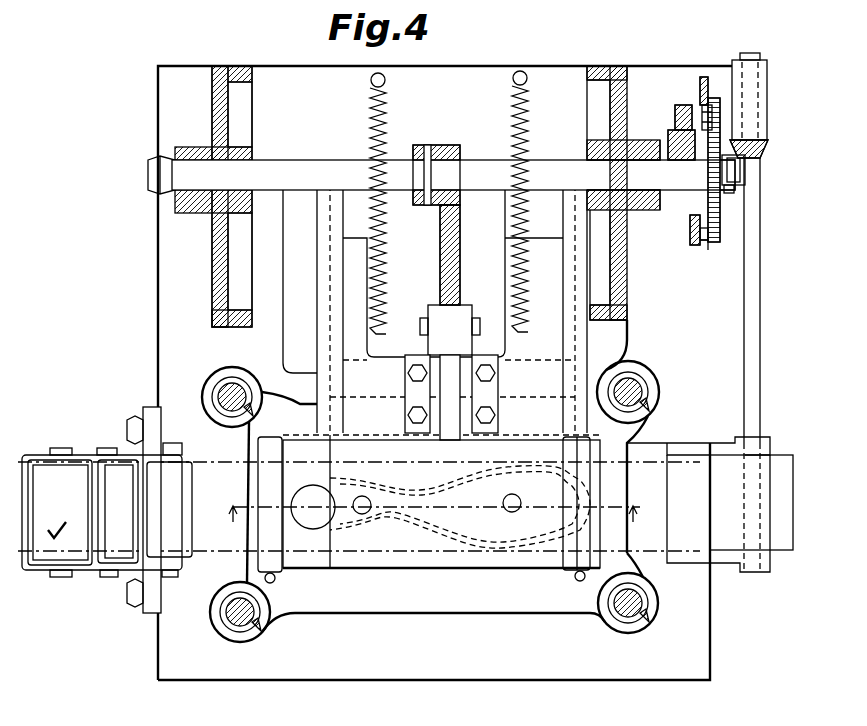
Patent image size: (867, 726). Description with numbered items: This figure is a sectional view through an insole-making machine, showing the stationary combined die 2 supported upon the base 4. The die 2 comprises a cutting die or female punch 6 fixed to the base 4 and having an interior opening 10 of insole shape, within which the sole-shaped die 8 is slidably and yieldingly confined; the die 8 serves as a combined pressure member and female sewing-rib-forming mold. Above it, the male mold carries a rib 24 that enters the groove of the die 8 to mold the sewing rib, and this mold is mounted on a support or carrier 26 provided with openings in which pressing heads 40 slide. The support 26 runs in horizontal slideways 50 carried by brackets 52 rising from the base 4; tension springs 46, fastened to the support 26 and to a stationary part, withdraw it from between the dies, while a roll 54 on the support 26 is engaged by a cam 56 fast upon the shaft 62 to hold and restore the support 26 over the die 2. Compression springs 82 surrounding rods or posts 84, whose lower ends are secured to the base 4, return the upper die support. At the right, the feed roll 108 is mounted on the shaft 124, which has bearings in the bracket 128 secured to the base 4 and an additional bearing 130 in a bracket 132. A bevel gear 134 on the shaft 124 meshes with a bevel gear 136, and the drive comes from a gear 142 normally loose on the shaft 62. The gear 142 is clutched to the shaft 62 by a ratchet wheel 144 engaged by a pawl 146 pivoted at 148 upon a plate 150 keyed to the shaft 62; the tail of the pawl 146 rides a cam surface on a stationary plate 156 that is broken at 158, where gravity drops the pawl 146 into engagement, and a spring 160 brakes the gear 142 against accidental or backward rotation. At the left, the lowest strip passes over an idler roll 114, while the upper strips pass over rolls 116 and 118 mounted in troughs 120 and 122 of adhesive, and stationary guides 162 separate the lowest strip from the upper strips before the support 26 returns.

The stationary combined die 2 is at (236, 440).
The base 4 is at (418, 620).
The cutting die or female punch 6 is at (233, 507).
The die 8 is at (296, 520).
The interior opening 10 is at (310, 511).
The rib 24 is at (467, 538).
The support or carrier 26 is at (410, 562).
The pressing heads 40 is at (368, 509).
The tension springs 46 is at (512, 118).
The horizontal slideways 50 is at (318, 340).
The brackets 52 is at (285, 336).
The roll 54 is at (447, 311).
The cam 56 is at (445, 268).
The shaft 62 is at (483, 157).
The compression springs 82 is at (227, 386).
The rods or posts 84 is at (235, 400).
The feed roll 108 is at (745, 518).
The idler roll 114 is at (167, 543).
The roll 116 is at (40, 470).
The roll 118 is at (107, 467).
The trough 120 is at (50, 567).
The trough 122 is at (113, 567).
The shaft 124 is at (745, 322).
The bracket 128 is at (708, 436).
The bearing 130 is at (760, 62).
The bracket 132 is at (733, 60).
The bevel gear 134 is at (755, 152).
The bevel gear 136 is at (745, 187).
The gear 142 is at (703, 171).
The ratchet wheel 144 is at (698, 145).
The pawl 146 is at (700, 248).
The pivot 148 is at (700, 236).
The plate 150 is at (690, 222).
The stationary plate 156 is at (702, 80).
The broken-away portion 158 is at (702, 107).
The spring 160 is at (730, 193).
The stationary guides 162 is at (263, 485).